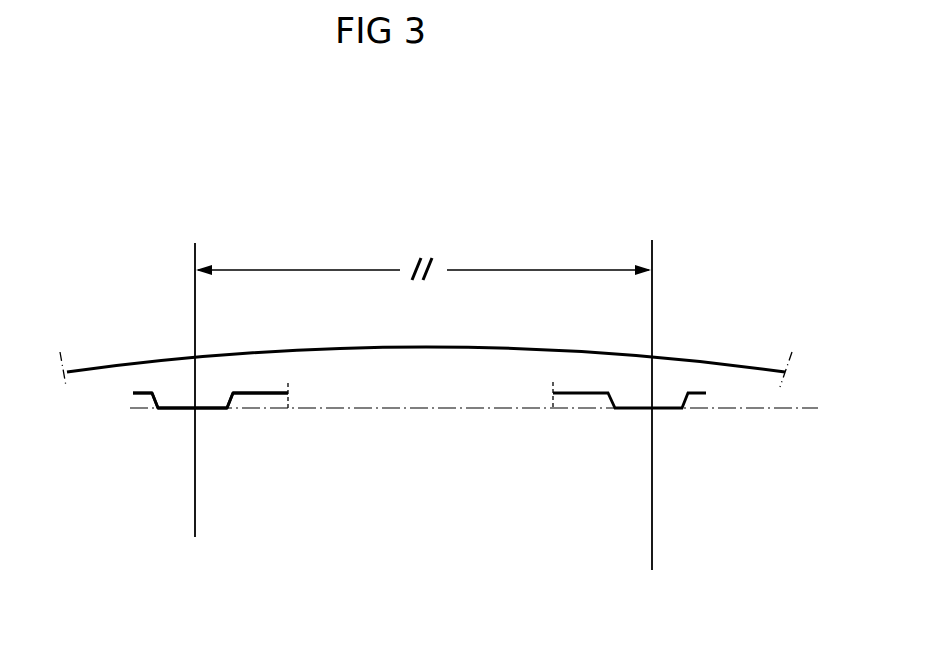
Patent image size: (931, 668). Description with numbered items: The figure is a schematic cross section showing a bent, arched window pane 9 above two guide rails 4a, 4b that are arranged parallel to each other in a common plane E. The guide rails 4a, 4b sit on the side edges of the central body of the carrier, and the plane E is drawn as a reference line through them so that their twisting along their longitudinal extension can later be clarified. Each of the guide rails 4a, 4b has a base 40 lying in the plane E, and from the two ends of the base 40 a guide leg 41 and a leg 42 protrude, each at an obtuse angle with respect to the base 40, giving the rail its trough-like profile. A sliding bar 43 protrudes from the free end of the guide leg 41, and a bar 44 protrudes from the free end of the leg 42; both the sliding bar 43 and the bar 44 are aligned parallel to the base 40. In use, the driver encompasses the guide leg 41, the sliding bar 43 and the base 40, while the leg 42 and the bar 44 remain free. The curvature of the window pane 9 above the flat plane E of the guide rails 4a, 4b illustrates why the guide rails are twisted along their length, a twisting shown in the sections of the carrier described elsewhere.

The window pane 9 is at (718, 362).
The plane E is at (742, 410).
The guide rail 4a is at (207, 410).
The guide rail 4b is at (627, 410).
The base 40 is at (180, 410).
The guide leg 41 is at (155, 398).
The leg 42 is at (237, 407).
The sliding bar 43 is at (138, 393).
The bar 44 is at (267, 391).